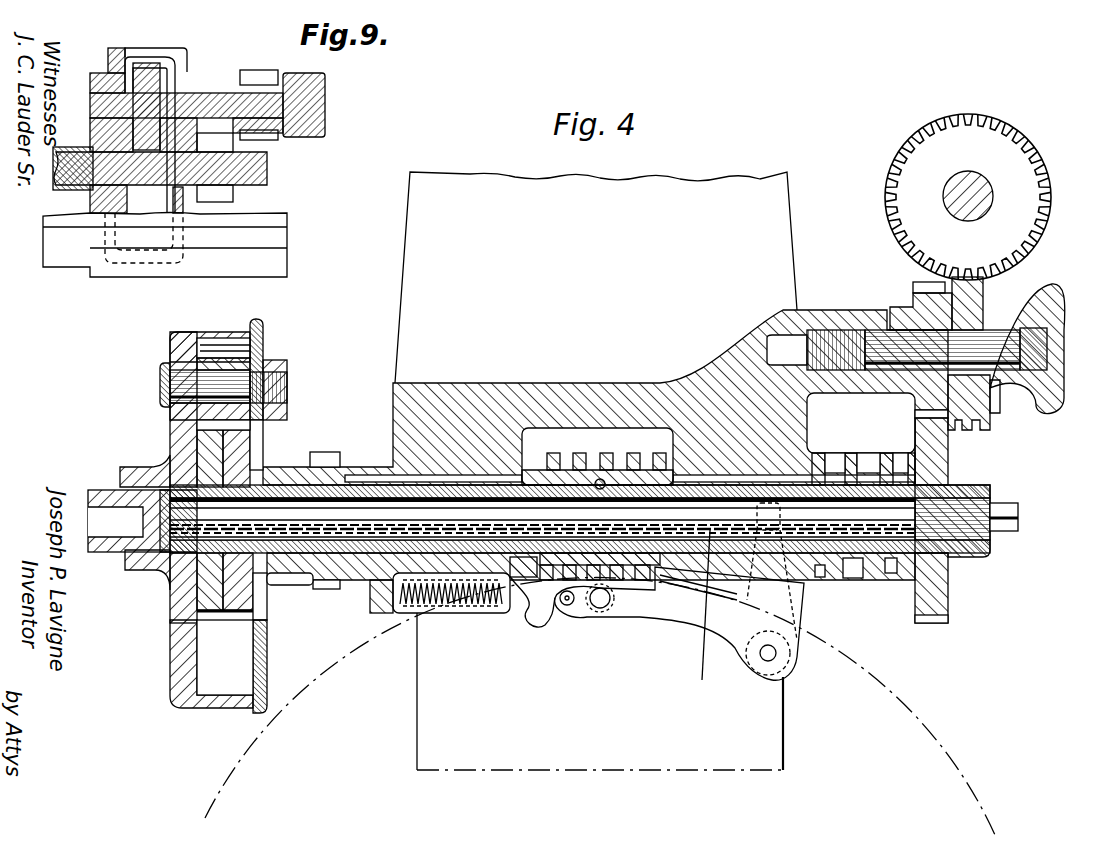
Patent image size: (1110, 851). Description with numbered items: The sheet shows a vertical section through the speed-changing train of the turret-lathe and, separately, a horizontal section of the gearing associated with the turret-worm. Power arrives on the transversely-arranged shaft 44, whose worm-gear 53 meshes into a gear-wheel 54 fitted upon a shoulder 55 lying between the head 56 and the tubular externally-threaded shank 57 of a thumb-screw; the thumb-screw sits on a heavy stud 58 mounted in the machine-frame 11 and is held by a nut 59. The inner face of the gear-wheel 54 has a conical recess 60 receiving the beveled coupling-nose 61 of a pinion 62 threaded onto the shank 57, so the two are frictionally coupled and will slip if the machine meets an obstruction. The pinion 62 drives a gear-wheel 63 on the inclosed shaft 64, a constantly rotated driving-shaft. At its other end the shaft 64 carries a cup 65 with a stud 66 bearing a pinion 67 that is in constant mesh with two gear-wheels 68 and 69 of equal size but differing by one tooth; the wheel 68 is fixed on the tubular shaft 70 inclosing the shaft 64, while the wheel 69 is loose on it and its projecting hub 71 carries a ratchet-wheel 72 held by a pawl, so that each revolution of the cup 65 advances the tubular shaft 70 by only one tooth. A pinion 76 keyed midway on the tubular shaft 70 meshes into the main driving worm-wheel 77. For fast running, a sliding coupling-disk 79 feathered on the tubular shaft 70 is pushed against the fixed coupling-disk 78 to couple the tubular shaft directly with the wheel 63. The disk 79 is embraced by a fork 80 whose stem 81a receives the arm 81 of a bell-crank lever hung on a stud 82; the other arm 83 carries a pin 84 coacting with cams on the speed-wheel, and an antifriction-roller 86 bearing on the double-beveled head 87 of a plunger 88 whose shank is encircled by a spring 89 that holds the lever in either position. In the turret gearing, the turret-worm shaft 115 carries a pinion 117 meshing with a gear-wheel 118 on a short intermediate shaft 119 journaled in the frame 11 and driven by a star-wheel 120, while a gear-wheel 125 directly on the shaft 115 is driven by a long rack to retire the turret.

In FIG. 4, the machine-frame 11 is at (805, 320).
In FIG. 9, the machine-frame 11 is at (112, 50).
In FIG. 4, the transversely-arranged shaft 44 is at (956, 196).
In FIG. 4, the worm-gear 53 is at (888, 204).
In FIG. 4, the gear-wheel 54 is at (984, 288).
In FIG. 4, the shoulder 55 is at (998, 388).
In FIG. 4, the head 56 is at (1032, 296).
In FIG. 4, the tubular externally-threaded shank 57 is at (910, 318).
In FIG. 4, the heavy stud 58 is at (893, 350).
In FIG. 4, the nut 59 is at (1048, 340).
In FIG. 4, the conical recess 60 is at (990, 415).
In FIG. 4, the beveled coupling-nose 61 is at (910, 398).
In FIG. 4, the pinion 62 is at (920, 414).
In FIG. 4, the gear-wheel 63 is at (945, 446).
In FIG. 4, the inclosed shaft 64 is at (553, 519).
In FIG. 4, the cup 65 is at (175, 652).
In FIG. 4, the stud 66 is at (223, 385).
In FIG. 4, the pinion 67 is at (250, 345).
In FIG. 4, the gear-wheel 68 is at (172, 437).
In FIG. 4, the gear-wheel 69 is at (262, 440).
In FIG. 4, the tubular shaft 70 is at (348, 486).
In FIG. 4, the projecting hub 71 is at (283, 575).
In FIG. 4, the ratchet-wheel 72 is at (325, 452).
In FIG. 4, the pinion 76 is at (598, 470).
In FIG. 4, the main driving worm-wheel 77 is at (362, 650).
In FIG. 4, the coupling-disk 78 is at (948, 463).
In FIG. 4, the sliding coupling-disk 79 is at (912, 578).
In FIG. 4, the fork 80 is at (872, 578).
In FIG. 4, the arm 81 is at (790, 597).
In FIG. 4, the stem 81a is at (712, 617).
In FIG. 4, the stud 82 is at (776, 654).
In FIG. 4, the arm 83 is at (688, 625).
In FIG. 4, the pin 84 is at (597, 608).
In FIG. 4, the antifriction-roller 86 is at (565, 612).
In FIG. 4, the double-beveled head 87 is at (585, 590).
In FIG. 4, the plunger 88 is at (498, 616).
In FIG. 4, the spring 89 is at (462, 616).
In FIG. 9, the turret-worm shaft 115 is at (258, 160).
In FIG. 9, the pinion 117 is at (136, 199).
In FIG. 9, the gear-wheel 118 is at (176, 68).
In FIG. 9, the short intermediate shaft 119 is at (213, 93).
In FIG. 9, the star-wheel 120 is at (262, 70).
In FIG. 9, the gear-wheel 125 is at (233, 193).